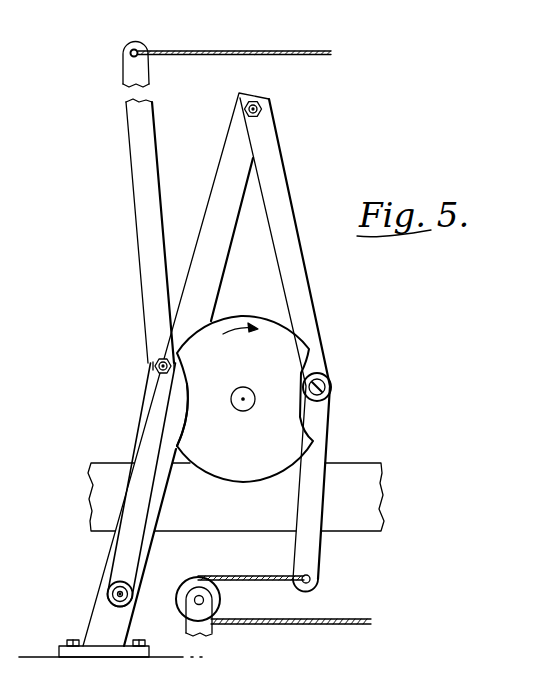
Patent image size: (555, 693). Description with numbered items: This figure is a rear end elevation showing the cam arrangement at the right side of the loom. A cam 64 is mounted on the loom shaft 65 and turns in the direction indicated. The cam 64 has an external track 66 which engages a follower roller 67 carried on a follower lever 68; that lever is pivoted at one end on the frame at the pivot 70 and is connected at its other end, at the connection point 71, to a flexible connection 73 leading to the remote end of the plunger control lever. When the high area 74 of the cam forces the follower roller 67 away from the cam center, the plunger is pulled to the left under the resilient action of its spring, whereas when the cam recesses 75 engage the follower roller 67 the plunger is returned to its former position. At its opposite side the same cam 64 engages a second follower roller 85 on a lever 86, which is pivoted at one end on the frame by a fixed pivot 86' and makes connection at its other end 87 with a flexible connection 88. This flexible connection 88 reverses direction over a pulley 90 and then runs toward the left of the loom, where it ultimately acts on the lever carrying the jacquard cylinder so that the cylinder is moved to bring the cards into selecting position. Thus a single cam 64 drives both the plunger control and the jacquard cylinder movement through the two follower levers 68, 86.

The cam 64 is at (251, 461).
The loom shaft 65 is at (240, 385).
The external track 66 is at (177, 421).
The follower roller 67 is at (167, 359).
The follower lever 68 is at (140, 269).
The pivot 70 is at (99, 588).
The connection point 71 is at (122, 50).
The flexible connection 73 is at (188, 42).
The high area 74 is at (263, 311).
The cam recesses 75 is at (178, 387).
The follower roller 85 is at (324, 385).
The lever 86 is at (292, 345).
The fixed pivot 86' is at (283, 99).
The connection end 87 is at (304, 571).
The flexible connection 88 is at (276, 617).
The pulley 90 is at (212, 592).